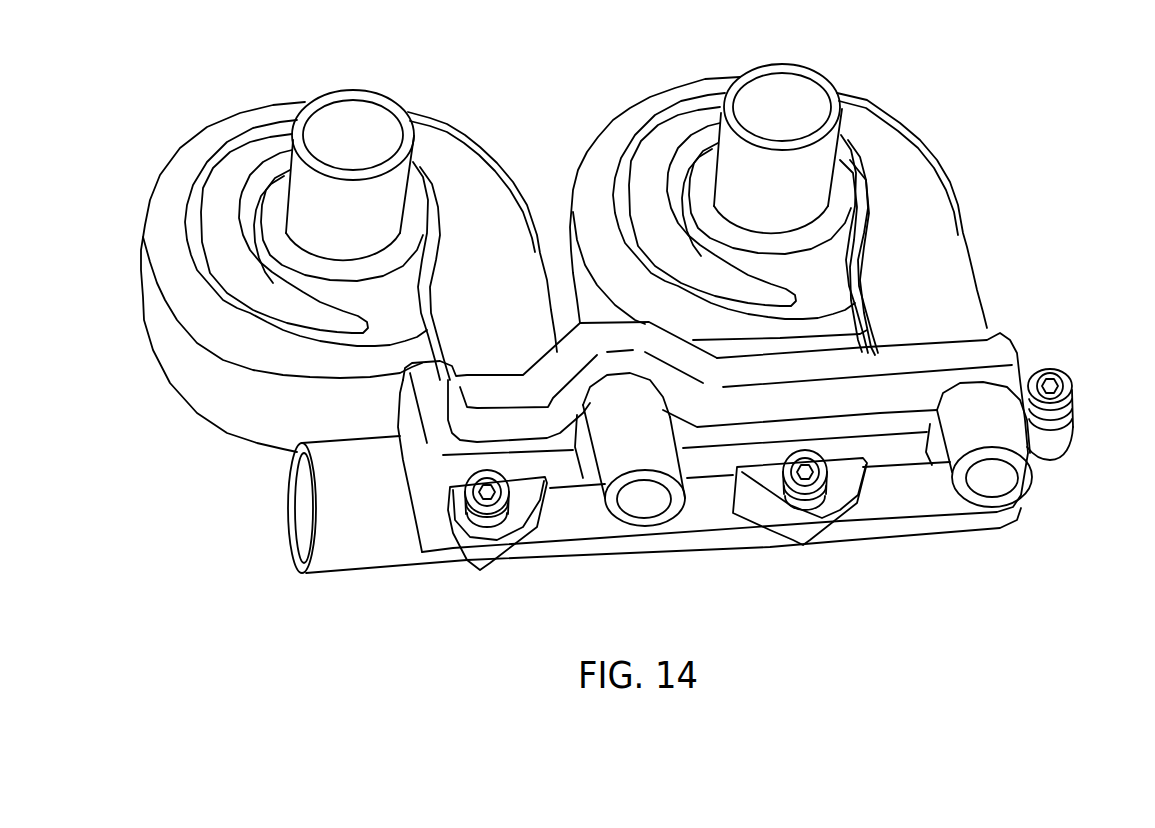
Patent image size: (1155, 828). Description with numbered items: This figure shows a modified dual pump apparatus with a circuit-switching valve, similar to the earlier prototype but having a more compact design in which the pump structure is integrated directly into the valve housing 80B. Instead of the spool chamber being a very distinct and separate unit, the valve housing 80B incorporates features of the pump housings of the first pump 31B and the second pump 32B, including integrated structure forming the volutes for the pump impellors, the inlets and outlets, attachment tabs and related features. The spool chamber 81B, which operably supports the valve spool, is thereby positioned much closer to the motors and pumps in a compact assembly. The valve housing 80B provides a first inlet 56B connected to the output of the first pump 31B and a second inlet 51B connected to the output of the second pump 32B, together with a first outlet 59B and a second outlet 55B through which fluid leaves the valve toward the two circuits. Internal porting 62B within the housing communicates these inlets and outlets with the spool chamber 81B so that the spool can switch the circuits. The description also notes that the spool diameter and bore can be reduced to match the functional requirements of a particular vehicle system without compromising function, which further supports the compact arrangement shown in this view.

The first pump 31B is at (197, 143).
The second pump 32B is at (638, 102).
The second inlet 51B is at (950, 327).
The second outlet 55B is at (1000, 477).
The first inlet 56B is at (521, 359).
The first outlet 59B is at (647, 507).
The port 62B is at (845, 392).
The valve housing 80B is at (1024, 338).
The spool chamber 81B is at (405, 574).